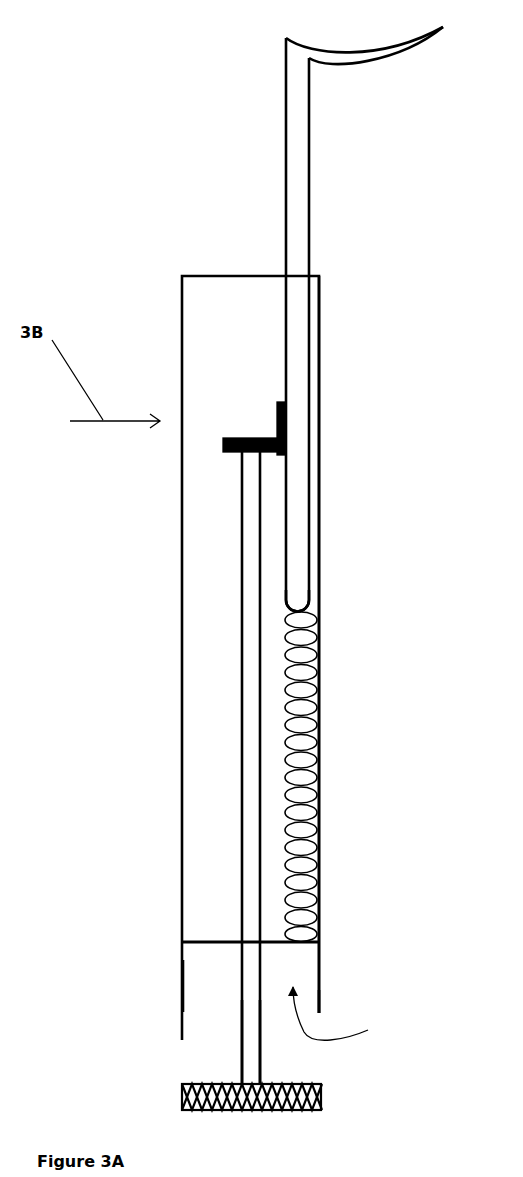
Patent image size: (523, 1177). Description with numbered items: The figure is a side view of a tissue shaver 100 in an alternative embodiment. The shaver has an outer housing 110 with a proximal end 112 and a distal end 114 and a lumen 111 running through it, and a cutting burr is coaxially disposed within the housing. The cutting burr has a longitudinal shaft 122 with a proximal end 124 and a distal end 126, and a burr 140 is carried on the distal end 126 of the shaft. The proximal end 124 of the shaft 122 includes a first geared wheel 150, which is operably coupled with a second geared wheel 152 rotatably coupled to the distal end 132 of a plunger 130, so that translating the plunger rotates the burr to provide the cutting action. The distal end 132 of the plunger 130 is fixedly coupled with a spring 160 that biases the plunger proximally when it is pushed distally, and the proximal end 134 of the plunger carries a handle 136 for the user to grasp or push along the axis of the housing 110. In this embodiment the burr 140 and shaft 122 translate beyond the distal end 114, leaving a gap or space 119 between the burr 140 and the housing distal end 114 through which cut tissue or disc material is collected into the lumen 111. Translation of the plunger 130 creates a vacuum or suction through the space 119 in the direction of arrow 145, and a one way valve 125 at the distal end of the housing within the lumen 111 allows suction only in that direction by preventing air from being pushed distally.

The tissue shaver 100 is at (105, 92).
The outer housing 110 is at (181, 583).
The lumen 111 is at (217, 889).
The proximal end 112 is at (321, 293).
The distal end 114 is at (319, 1005).
The gap or space 119 is at (190, 1055).
The longitudinal shaft 122 is at (247, 771).
The proximal end 124 is at (243, 485).
The one way valve 125 is at (208, 941).
The distal end 126 is at (247, 1020).
The plunger 130 is at (278, 157).
The distal end 132 is at (297, 568).
The proximal end 134 is at (297, 87).
The handle 136 is at (392, 62).
The burr 140 is at (300, 1090).
The arrow 145 is at (307, 1035).
The first geared wheel 150 is at (233, 430).
The second geared wheel 152 is at (280, 405).
The spring 160 is at (290, 740).